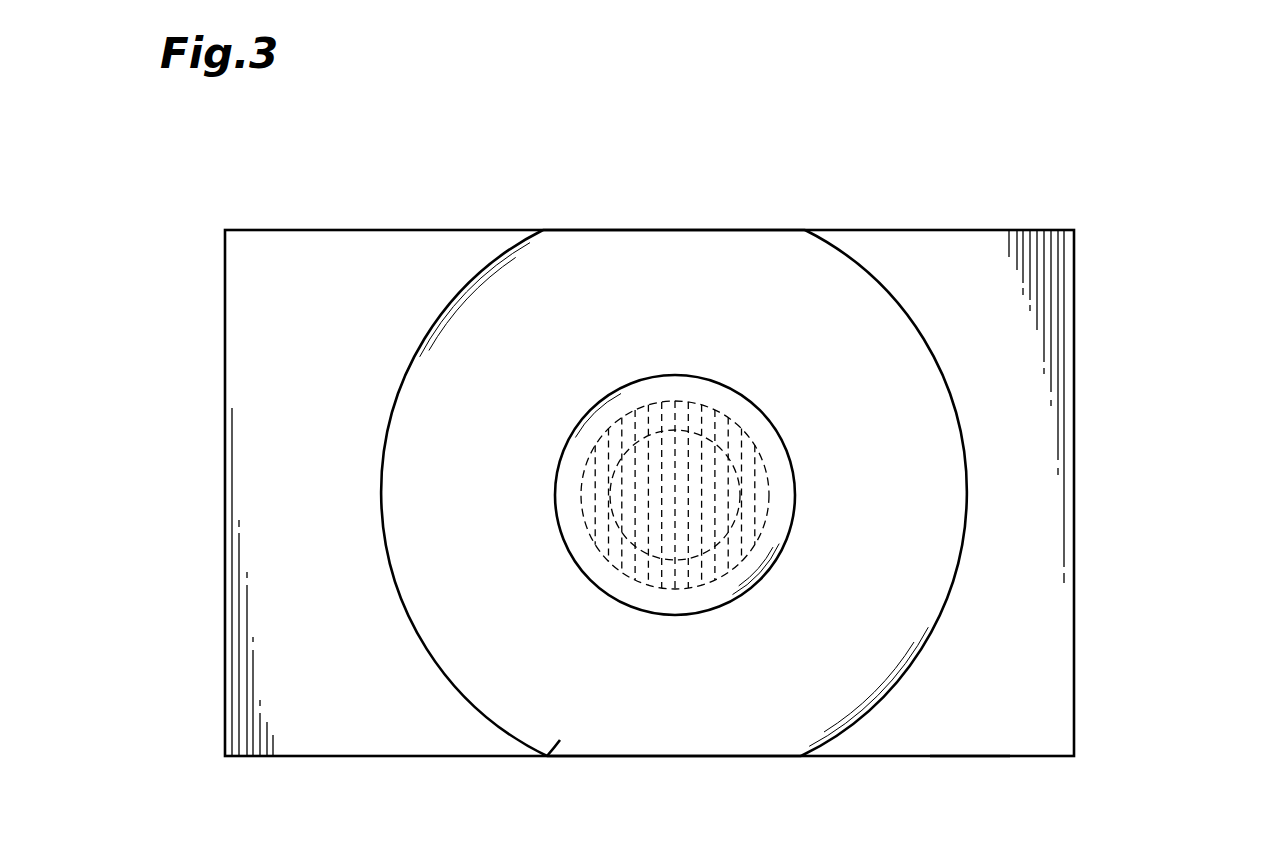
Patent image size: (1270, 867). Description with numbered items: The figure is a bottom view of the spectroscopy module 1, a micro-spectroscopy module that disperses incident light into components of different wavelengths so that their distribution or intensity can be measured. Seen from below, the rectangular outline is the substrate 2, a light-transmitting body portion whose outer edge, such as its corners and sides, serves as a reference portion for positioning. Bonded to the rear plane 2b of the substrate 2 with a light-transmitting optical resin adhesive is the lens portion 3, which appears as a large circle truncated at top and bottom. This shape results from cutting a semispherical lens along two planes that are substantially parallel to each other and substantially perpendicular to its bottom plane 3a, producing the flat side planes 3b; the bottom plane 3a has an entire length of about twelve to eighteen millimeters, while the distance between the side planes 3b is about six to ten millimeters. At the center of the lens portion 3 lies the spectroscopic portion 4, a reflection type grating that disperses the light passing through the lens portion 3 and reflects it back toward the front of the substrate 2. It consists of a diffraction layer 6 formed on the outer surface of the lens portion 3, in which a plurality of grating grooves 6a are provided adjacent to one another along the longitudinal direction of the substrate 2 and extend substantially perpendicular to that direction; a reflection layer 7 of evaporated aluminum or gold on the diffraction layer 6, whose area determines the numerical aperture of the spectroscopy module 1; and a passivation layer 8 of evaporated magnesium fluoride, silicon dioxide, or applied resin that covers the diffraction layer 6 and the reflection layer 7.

The spectroscopy module 1 is at (1178, 183).
The substrate 2 is at (1074, 712).
The rear plane of the substrate 2b is at (966, 738).
The lens portion 3 is at (449, 305).
The bottom plane of the lens portion 3a is at (590, 730).
The side planes of the lens portion 3b is at (676, 230).
The spectroscopic portion 4 is at (574, 574).
The diffraction layer 6 is at (753, 443).
The grating grooves 6a is at (647, 422).
The reflection layer 7 is at (728, 533).
The passivation layer 8 is at (780, 495).